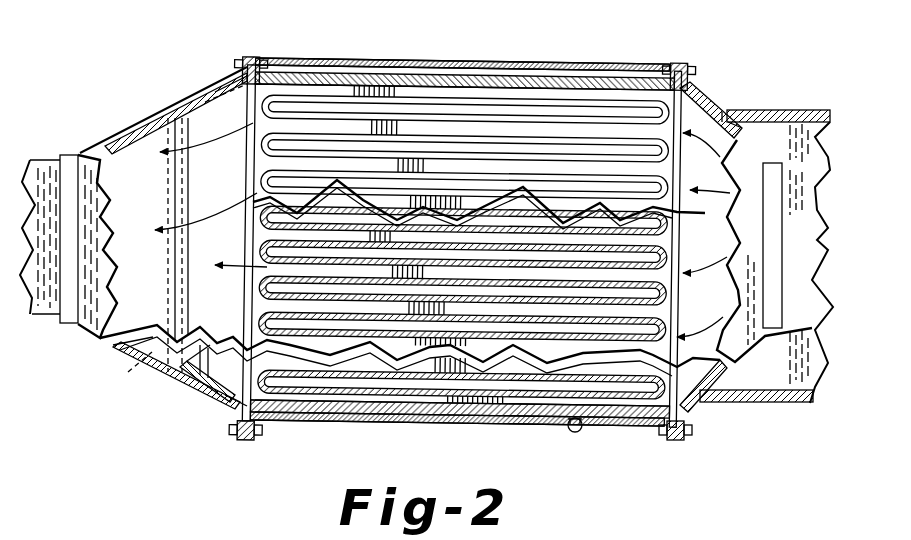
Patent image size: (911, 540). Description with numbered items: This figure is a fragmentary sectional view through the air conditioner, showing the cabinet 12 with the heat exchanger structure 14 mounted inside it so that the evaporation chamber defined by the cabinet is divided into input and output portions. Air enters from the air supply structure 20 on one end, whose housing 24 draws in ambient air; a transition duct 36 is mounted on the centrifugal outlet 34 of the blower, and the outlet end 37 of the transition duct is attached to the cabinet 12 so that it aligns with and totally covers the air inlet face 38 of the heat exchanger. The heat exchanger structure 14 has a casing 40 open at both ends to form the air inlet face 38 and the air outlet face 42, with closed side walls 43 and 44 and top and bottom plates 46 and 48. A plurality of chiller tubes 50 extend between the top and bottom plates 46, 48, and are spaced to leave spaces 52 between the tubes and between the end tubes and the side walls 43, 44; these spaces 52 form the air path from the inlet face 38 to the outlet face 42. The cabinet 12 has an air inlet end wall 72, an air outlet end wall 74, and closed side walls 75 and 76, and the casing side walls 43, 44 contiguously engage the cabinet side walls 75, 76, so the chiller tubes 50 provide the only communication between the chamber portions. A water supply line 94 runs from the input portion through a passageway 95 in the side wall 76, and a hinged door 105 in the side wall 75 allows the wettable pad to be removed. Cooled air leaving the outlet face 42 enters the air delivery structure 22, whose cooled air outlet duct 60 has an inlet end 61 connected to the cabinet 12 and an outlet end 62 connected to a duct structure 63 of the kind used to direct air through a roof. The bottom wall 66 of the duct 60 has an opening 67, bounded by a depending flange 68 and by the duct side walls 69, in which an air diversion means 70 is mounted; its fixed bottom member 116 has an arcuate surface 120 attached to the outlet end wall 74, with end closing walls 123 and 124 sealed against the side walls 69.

The cabinet 12 is at (630, 72).
The heat exchanger structure 14 is at (537, 64).
The air supply structure 20 is at (795, 108).
The air delivery structure 22 is at (75, 150).
The housing 24 is at (757, 404).
The centrifugal outlet 34 is at (815, 183).
The transition duct 36 is at (748, 160).
The outlet end 37 is at (702, 103).
The air inlet face 38 is at (700, 213).
The casing 40 is at (482, 418).
The air outlet face 42 is at (243, 182).
The side wall 43 is at (445, 82).
The side wall 44 is at (543, 420).
The top plate 46 is at (336, 90).
The bottom plate 48 is at (298, 395).
The chiller tubes 50 is at (553, 142).
The spaces 52 is at (423, 140).
The cooled air outlet duct 60 is at (112, 135).
The inlet end 61 is at (262, 70).
The outlet end 62 is at (70, 325).
The duct structure 63 is at (48, 157).
The bottom wall 66 is at (153, 143).
The opening 67 is at (172, 205).
The depending flange 68 is at (127, 372).
The side walls 69 is at (207, 87).
The air diversion means 70 is at (165, 193).
The air inlet end wall 72 is at (688, 426).
The air outlet end wall 74 is at (250, 440).
The side wall 75 is at (470, 78).
The side wall 76 is at (458, 418).
The water supply line 94 is at (575, 432).
The passageway 95 is at (585, 420).
The hinged door 105 is at (652, 68).
The bottom member 116 is at (186, 378).
The arcuate surface 120 is at (210, 372).
The end closing wall 123 is at (218, 378).
The end closing wall 124 is at (200, 88).